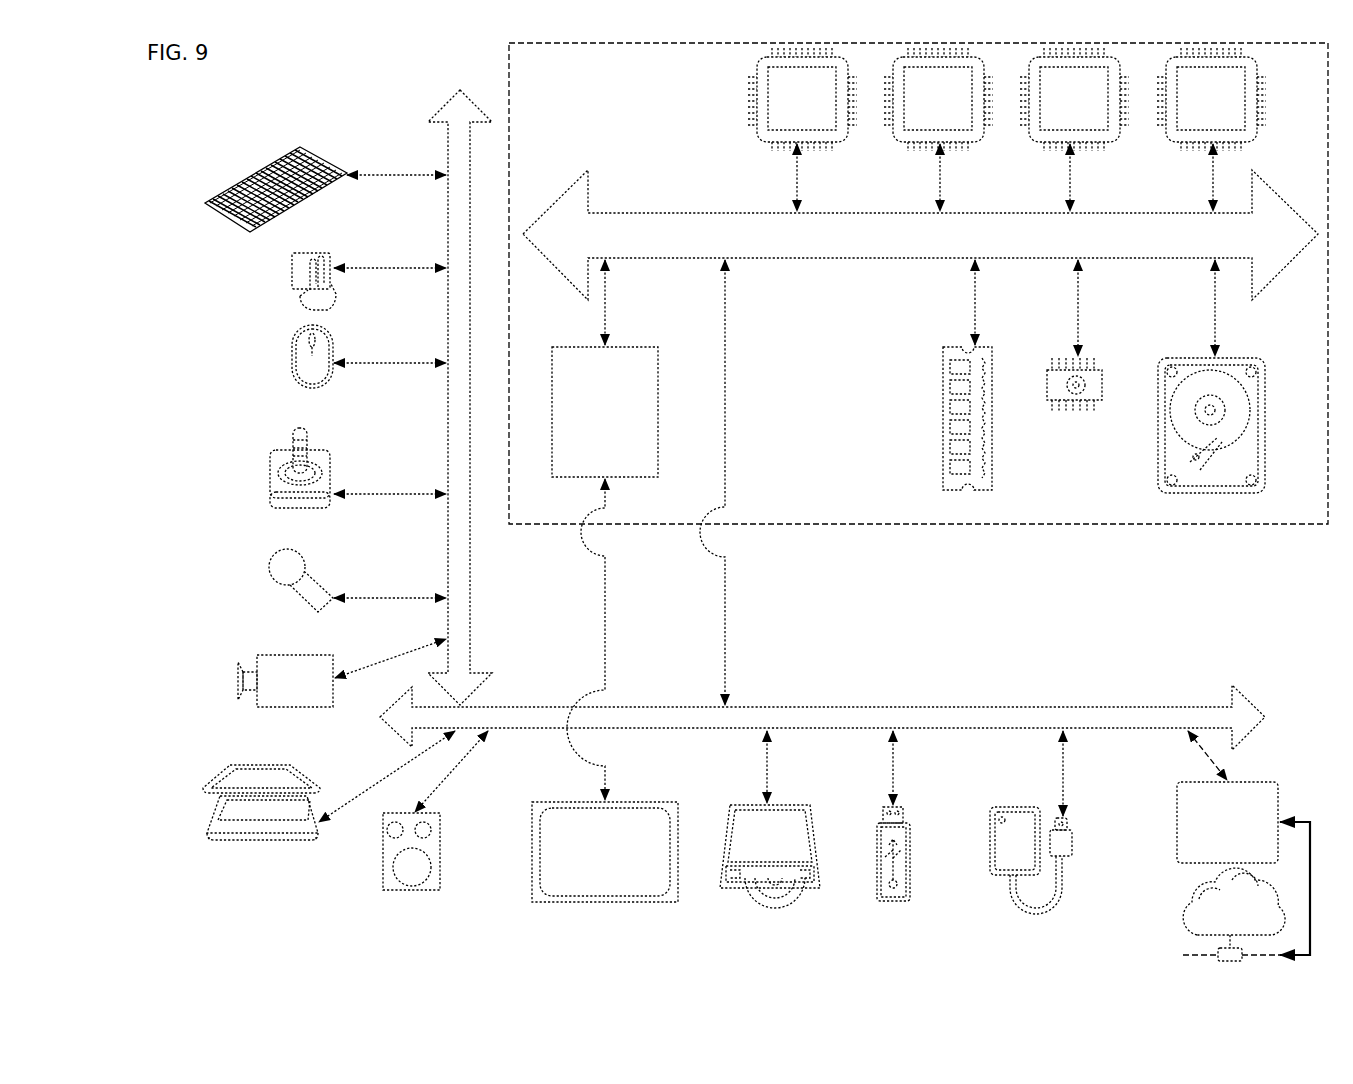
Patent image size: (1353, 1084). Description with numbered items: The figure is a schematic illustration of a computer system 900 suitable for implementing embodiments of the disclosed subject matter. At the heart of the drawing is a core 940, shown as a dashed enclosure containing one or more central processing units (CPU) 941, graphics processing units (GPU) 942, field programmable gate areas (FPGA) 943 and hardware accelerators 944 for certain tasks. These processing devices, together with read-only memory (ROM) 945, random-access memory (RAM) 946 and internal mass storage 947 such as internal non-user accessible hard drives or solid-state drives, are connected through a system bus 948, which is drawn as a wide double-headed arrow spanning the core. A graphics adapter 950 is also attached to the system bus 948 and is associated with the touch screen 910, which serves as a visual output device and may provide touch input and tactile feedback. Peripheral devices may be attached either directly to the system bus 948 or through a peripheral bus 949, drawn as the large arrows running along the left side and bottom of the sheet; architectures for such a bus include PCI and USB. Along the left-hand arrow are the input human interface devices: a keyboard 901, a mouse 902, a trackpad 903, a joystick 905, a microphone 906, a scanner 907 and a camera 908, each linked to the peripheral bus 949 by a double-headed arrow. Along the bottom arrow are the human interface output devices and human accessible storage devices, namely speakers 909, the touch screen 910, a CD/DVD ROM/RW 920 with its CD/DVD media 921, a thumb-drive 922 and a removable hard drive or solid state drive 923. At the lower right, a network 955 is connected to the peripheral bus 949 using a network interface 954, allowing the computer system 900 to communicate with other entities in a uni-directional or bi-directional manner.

The computer system 900 is at (731, 504).
The keyboard 901 is at (206, 206).
The mouse 902 is at (292, 355).
The trackpad 903 is at (292, 280).
The joystick 905 is at (270, 492).
The microphone 906 is at (270, 570).
The scanner 907 is at (211, 827).
The camera 908 is at (240, 682).
The speakers 909 is at (412, 890).
The touch screen 910 is at (605, 903).
The CD/DVD ROM/RW 920 is at (815, 887).
The CD/DVD media 921 is at (757, 897).
The thumb-drive 922 is at (893, 902).
The removable hard drive or solid state drive 923 is at (990, 877).
The core 940 is at (910, 526).
The Central Processing Unit 941 is at (802, 129).
The Graphics Processing Unit 942 is at (938, 129).
The Field Programmable Gate Area 943 is at (1074, 129).
The hardware accelerator 944 is at (1211, 129).
The Read-only memory 945 is at (1067, 412).
The Random-access memory 946 is at (943, 413).
The internal mass storage 947 is at (1173, 360).
The system bus 948 is at (920, 235).
The peripheral bus 949 is at (448, 128).
The graphics adapter 950 is at (605, 368).
The network interface 954 is at (1227, 797).
The network 955 is at (1184, 920).